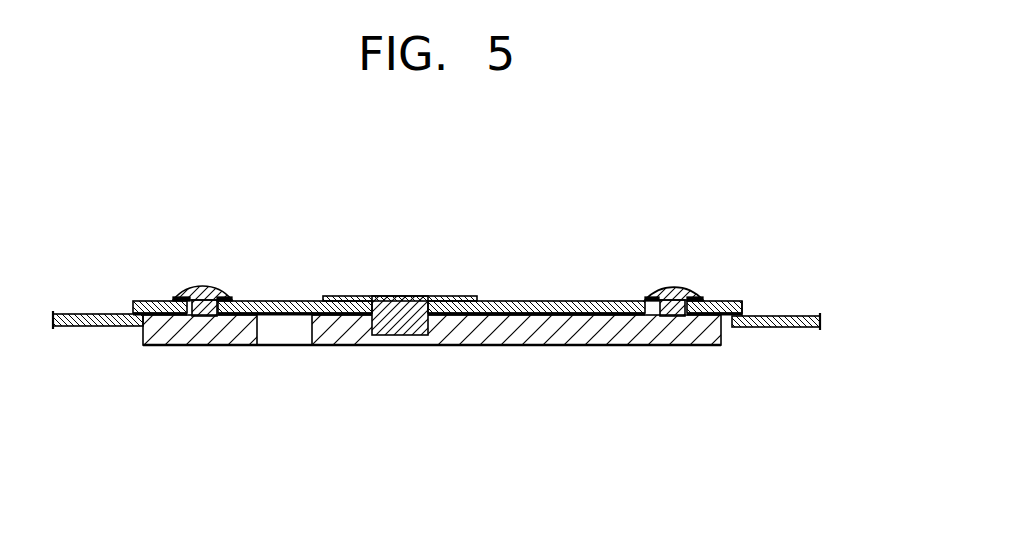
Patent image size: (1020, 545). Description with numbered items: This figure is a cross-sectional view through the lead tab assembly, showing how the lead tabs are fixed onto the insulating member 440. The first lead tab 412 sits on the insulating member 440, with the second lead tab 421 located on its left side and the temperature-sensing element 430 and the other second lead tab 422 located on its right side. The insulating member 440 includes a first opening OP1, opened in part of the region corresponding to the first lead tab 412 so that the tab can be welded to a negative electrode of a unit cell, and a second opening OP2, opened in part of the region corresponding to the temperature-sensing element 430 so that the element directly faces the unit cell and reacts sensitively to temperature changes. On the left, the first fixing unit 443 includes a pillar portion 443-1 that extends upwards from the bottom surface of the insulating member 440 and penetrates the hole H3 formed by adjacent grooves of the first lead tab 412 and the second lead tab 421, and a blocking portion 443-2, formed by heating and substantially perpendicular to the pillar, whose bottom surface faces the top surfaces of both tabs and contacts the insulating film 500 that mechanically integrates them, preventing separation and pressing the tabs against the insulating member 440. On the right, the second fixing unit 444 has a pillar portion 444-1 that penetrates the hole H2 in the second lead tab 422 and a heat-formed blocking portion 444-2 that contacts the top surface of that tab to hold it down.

The insulating member 440 is at (685, 346).
The second lead tab 421 is at (100, 313).
The second lead tab 422 is at (548, 300).
The first lead tab 412 is at (282, 300).
The temperature-sensing element 430 is at (400, 295).
The first fixing unit 443 is at (202, 278).
The pillar portion 443-1 is at (198, 284).
The blocking portion 443-2 is at (217, 286).
The second fixing unit 444 is at (668, 234).
The pillar portion 444-1 is at (665, 287).
The blocking portion 444-2 is at (683, 287).
The insulating film 500 is at (215, 304).
The hole H3 is at (192, 318).
The hole H2 is at (662, 316).
The first opening OP1 is at (280, 341).
The second opening OP2 is at (402, 339).